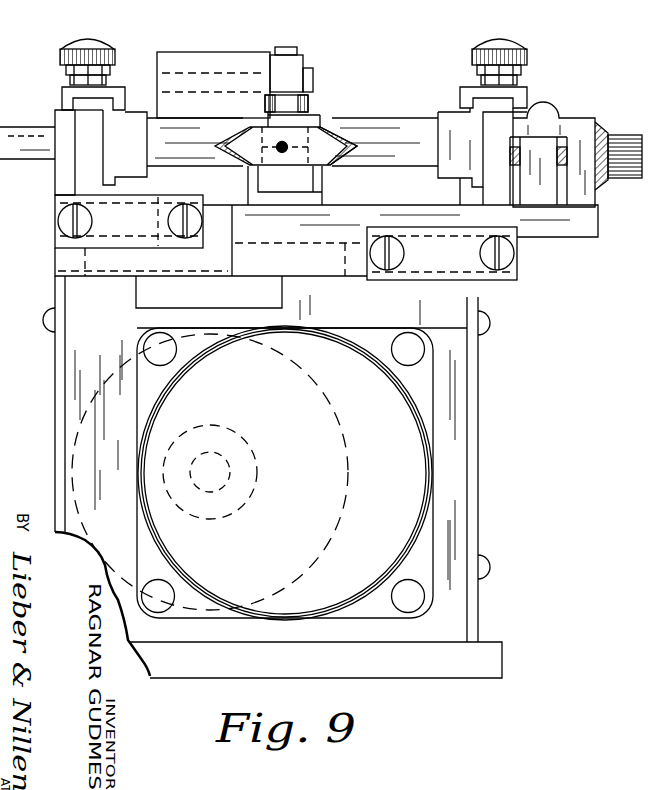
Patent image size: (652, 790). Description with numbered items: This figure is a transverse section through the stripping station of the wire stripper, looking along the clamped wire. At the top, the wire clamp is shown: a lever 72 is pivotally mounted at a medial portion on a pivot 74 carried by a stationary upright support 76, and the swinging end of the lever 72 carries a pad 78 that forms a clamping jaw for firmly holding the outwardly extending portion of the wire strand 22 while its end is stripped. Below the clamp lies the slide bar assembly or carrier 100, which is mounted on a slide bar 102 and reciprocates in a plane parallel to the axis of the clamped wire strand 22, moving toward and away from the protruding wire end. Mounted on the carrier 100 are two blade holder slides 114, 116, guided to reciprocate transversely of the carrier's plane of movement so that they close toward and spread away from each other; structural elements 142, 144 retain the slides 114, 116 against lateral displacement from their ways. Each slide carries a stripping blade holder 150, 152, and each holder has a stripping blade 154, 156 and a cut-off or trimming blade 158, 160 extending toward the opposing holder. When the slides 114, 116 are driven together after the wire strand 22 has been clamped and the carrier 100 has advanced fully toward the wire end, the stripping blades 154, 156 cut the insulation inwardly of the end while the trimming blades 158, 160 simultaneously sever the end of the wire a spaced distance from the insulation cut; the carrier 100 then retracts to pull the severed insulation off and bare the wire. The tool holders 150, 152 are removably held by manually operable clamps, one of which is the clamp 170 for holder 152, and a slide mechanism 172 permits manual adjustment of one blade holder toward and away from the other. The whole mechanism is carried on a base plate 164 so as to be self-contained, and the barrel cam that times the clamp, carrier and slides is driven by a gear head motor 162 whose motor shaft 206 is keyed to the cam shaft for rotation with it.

The wire strand 22 is at (281, 142).
The lever 72 is at (293, 63).
The pivot 74 is at (308, 83).
The stationary upright support 76 is at (211, 57).
The pad 78 is at (313, 103).
The carrier 100 is at (309, 265).
The slide bar 102 is at (226, 303).
The blade holder slide 114 is at (9, 126).
The blade holder slide 116 is at (571, 230).
The structural element 142 is at (55, 197).
The structural element 144 is at (508, 230).
The stripping blade holder 150 is at (129, 130).
The stripping blade holder 152 is at (457, 124).
The stripping blade 154 is at (168, 127).
The stripping blade 156 is at (398, 130).
The trimming blade 158 is at (250, 124).
The trimming blade 160 is at (322, 126).
The gear head motor 162 is at (323, 445).
The base plate 164 is at (496, 654).
The manually operable clamp 170 is at (523, 89).
The slide mechanism 172 is at (582, 130).
The motor shaft 206 is at (210, 468).